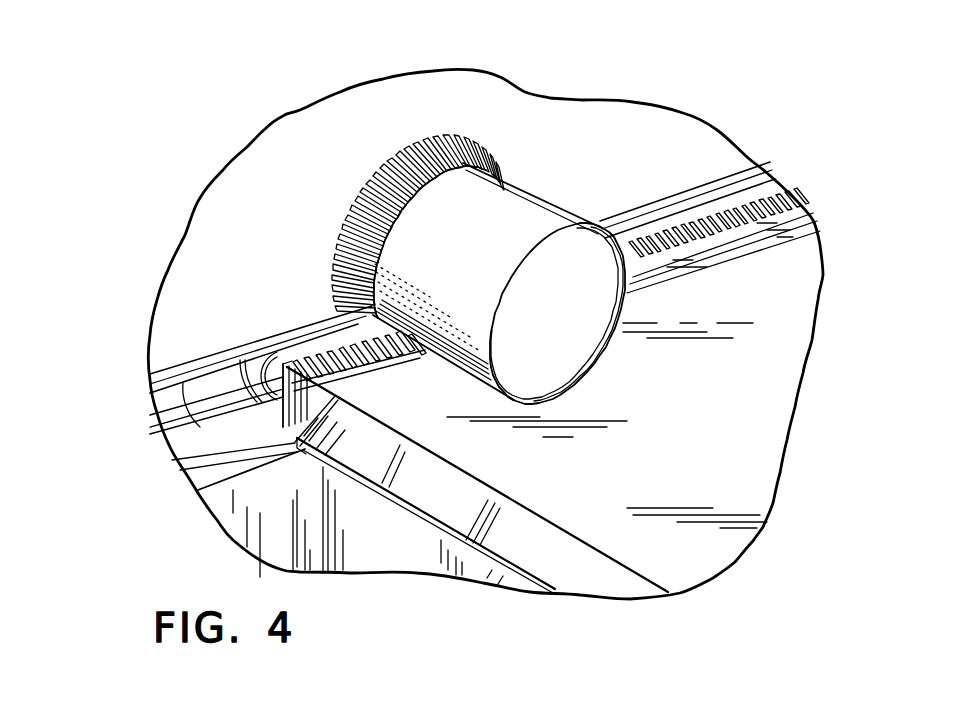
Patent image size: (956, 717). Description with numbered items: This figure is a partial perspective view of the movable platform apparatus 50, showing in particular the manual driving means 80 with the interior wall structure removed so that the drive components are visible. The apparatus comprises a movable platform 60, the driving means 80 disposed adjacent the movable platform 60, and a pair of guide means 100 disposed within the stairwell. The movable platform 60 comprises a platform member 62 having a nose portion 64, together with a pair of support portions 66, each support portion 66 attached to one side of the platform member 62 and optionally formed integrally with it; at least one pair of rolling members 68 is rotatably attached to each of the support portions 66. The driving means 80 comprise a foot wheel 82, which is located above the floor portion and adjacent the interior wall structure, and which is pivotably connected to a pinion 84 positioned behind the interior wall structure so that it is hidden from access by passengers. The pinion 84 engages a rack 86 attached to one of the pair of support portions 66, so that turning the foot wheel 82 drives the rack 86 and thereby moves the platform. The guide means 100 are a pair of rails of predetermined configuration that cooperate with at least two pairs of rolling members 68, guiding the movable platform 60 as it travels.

The movable platform apparatus 50 is at (644, 619).
The movable platform 60 is at (758, 580).
The platform member 62 is at (626, 452).
The nose portion 64 is at (523, 552).
The support portion 66 is at (197, 407).
The rolling members 68 is at (308, 326).
The driving means 80 is at (462, 218).
The foot wheel 82 is at (538, 196).
The pinion 84 is at (376, 186).
The rack 86 is at (733, 210).
The guide means 100 is at (420, 298).